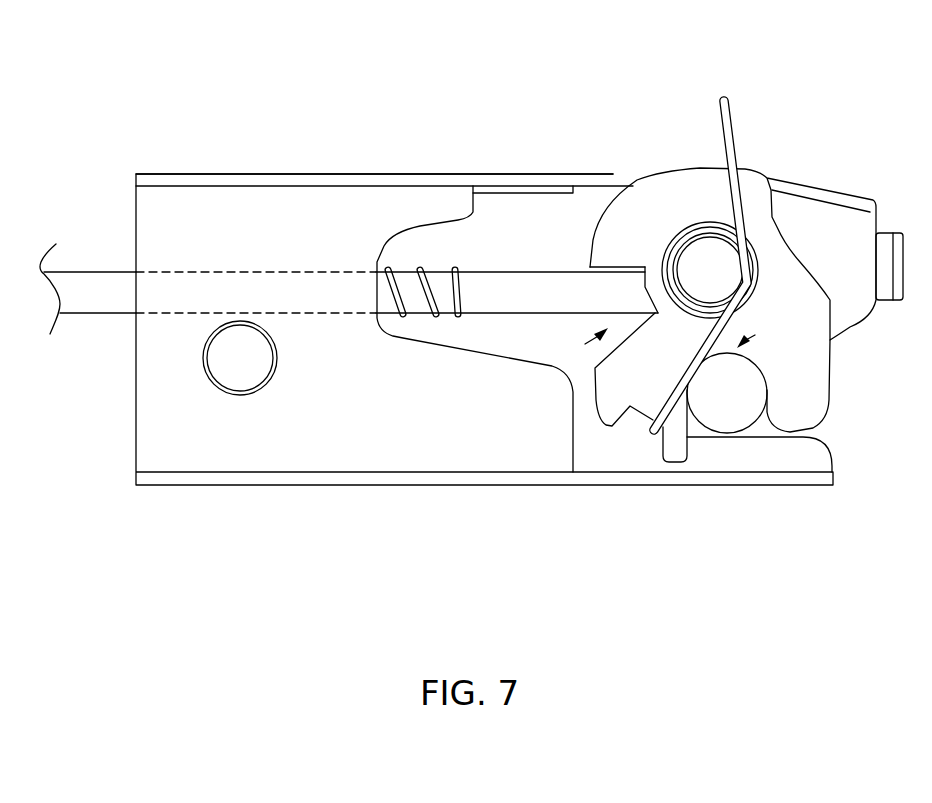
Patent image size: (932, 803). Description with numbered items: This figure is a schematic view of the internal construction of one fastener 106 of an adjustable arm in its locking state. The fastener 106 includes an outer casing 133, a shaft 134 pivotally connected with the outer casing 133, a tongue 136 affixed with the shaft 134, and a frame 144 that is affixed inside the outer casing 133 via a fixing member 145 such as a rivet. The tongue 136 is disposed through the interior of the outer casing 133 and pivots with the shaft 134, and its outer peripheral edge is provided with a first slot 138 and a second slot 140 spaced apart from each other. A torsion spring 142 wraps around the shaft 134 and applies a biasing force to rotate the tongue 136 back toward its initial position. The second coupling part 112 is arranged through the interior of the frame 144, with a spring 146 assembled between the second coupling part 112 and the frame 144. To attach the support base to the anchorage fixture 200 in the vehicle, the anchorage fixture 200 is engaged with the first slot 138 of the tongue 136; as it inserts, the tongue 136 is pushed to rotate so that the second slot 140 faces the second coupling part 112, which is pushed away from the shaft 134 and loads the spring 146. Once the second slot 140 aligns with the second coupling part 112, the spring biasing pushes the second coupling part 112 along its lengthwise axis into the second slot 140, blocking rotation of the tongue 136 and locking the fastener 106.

The fastener 106 is at (150, 78).
The second coupling part 112 is at (497, 294).
The outer casing 133 is at (377, 188).
The shaft 134 is at (712, 250).
The tongue 136 is at (807, 413).
The first slot 138 is at (747, 338).
The second slot 140 is at (597, 337).
The torsion spring 142 is at (723, 97).
The frame 144 is at (256, 200).
The fixing member 145 is at (238, 378).
The spring 146 is at (428, 325).
The anchorage fixture 200 is at (727, 422).